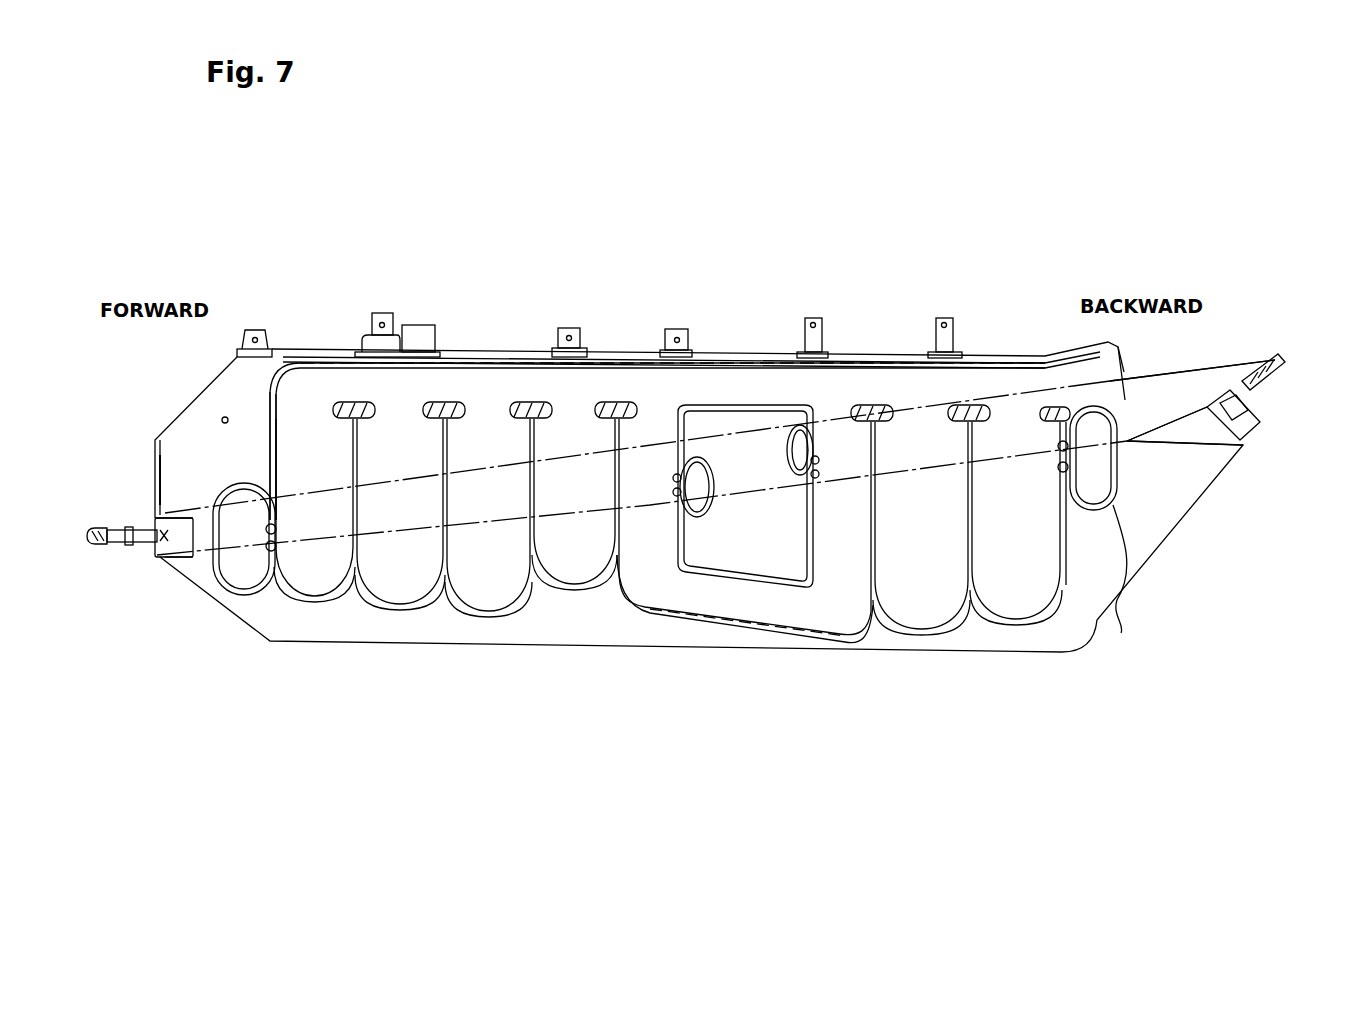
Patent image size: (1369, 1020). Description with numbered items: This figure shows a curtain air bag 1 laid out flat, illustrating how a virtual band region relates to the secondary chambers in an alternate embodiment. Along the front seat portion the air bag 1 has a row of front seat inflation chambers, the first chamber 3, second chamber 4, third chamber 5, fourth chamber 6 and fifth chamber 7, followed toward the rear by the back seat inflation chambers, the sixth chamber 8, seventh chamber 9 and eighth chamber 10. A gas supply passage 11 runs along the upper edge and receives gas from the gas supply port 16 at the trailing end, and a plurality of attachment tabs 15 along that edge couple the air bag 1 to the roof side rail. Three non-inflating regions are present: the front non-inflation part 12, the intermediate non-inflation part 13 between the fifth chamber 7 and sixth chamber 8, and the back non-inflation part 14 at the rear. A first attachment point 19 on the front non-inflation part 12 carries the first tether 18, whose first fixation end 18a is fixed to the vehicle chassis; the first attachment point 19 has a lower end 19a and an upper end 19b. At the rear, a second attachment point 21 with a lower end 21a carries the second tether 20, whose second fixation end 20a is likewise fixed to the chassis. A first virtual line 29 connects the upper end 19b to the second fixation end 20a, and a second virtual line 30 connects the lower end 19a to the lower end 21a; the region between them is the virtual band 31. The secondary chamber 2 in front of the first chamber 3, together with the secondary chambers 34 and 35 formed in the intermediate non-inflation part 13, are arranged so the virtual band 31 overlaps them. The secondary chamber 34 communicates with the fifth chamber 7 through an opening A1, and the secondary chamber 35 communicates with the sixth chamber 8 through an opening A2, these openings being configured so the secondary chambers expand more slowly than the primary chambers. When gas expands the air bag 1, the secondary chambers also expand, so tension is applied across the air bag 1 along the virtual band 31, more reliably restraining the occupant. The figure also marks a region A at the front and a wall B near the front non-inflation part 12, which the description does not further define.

The air bag 1 is at (596, 239).
The secondary chamber 2 is at (1140, 630).
The first chamber 3 is at (301, 508).
The second chamber 4 is at (391, 508).
The third chamber 5 is at (481, 508).
The fourth chamber 6 is at (568, 508).
The fifth chamber 7 is at (639, 508).
The sixth chamber 8 is at (831, 514).
The seventh chamber 9 is at (916, 514).
The eighth chamber 10 is at (1001, 514).
The gas supply passage 11 is at (738, 403).
The front non-inflation part 12 is at (218, 474).
The intermediate non-inflation part 13 is at (755, 482).
The back non-inflation part 14 is at (1105, 555).
The attachment tabs 15 is at (255, 330).
The gas supply port 16 is at (1122, 372).
The first tether 18 is at (140, 543).
The first fixation end 18a is at (92, 528).
The first attachment point 19 is at (180, 548).
The lower end 19a is at (193, 560).
The upper end 19b is at (152, 515).
The second tether 20 is at (1265, 405).
The second fixation end 20a is at (1283, 365).
The second attachment point 21 is at (1252, 428).
The lower end 21a is at (1245, 442).
The first virtual line 29 is at (1018, 368).
The second virtual line 30 is at (1180, 462).
The virtual band 31 is at (1190, 395).
The secondary chamber 34 is at (698, 500).
The secondary chamber 35 is at (800, 455).
The front support point A is at (283, 565).
The opening A1 is at (672, 492).
The opening A2 is at (812, 478).
The front wall B is at (306, 395).